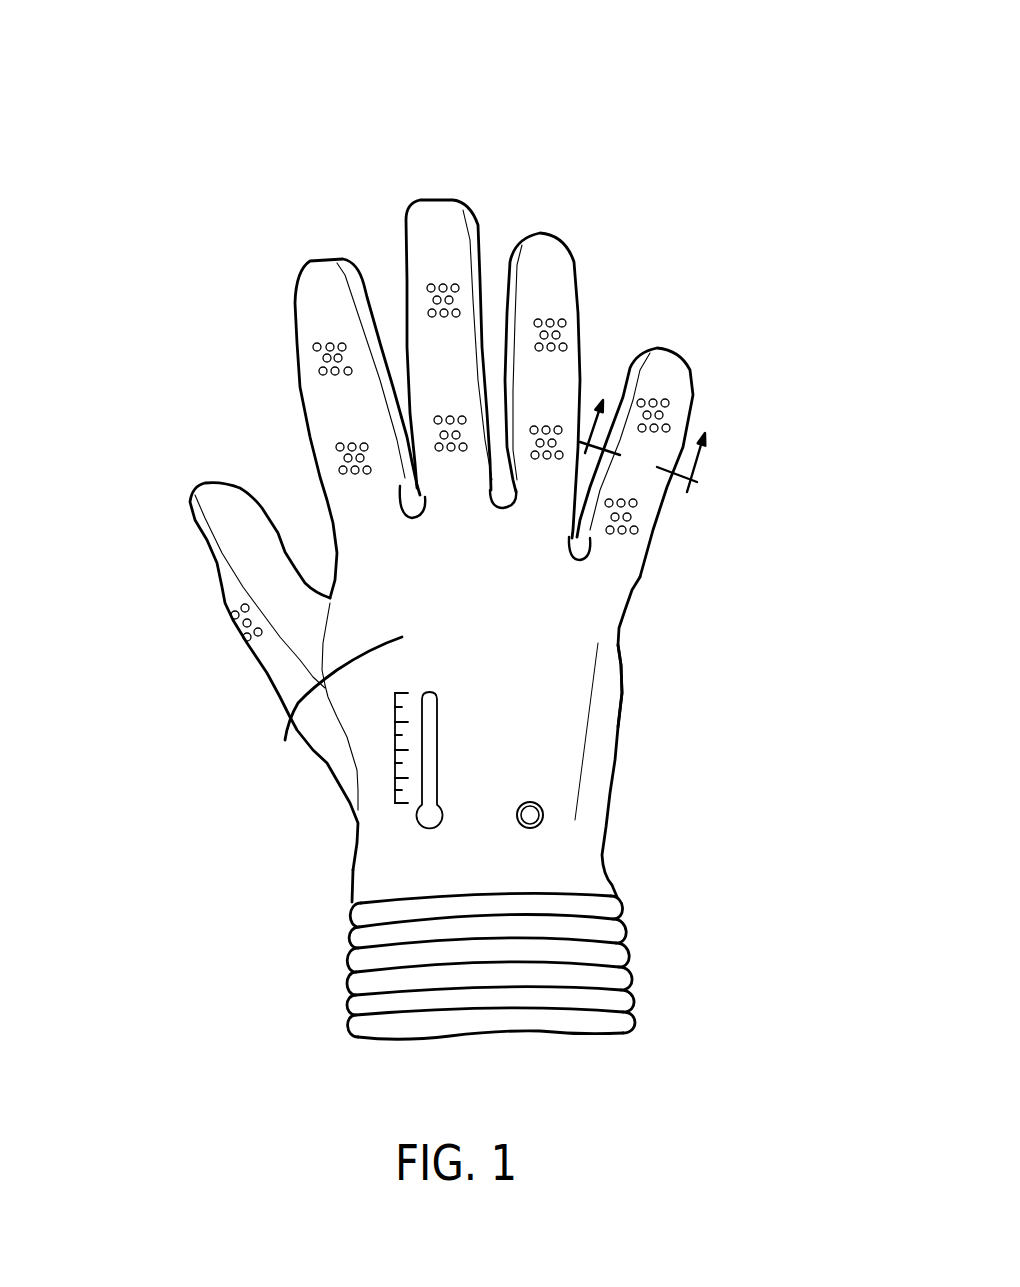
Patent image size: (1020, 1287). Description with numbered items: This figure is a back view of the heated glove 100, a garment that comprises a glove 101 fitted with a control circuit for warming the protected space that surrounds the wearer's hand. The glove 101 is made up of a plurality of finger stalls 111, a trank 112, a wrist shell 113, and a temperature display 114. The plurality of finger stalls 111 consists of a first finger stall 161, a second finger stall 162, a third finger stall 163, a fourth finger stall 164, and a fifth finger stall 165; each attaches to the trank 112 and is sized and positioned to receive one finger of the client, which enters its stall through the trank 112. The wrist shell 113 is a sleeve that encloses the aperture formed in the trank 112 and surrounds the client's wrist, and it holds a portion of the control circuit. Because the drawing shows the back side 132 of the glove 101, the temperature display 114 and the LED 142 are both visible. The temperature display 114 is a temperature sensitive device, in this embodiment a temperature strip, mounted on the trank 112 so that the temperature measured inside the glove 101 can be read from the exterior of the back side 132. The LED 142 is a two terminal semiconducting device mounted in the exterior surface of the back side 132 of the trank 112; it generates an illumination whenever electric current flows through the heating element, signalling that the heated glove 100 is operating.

The heated glove 100 is at (208, 178).
The glove 101 is at (265, 290).
The plurality of finger stalls 111 is at (717, 0).
The trank 112 is at (285, 740).
The wrist shell 113 is at (630, 975).
The temperature display 114 is at (437, 750).
The back side 132 is at (622, 677).
The LED 142 is at (543, 814).
The first finger stall 161 is at (205, 537).
The second finger stall 162 is at (318, 272).
The third finger stall 163 is at (428, 213).
The fourth finger stall 164 is at (545, 248).
The fifth finger stall 165 is at (670, 368).